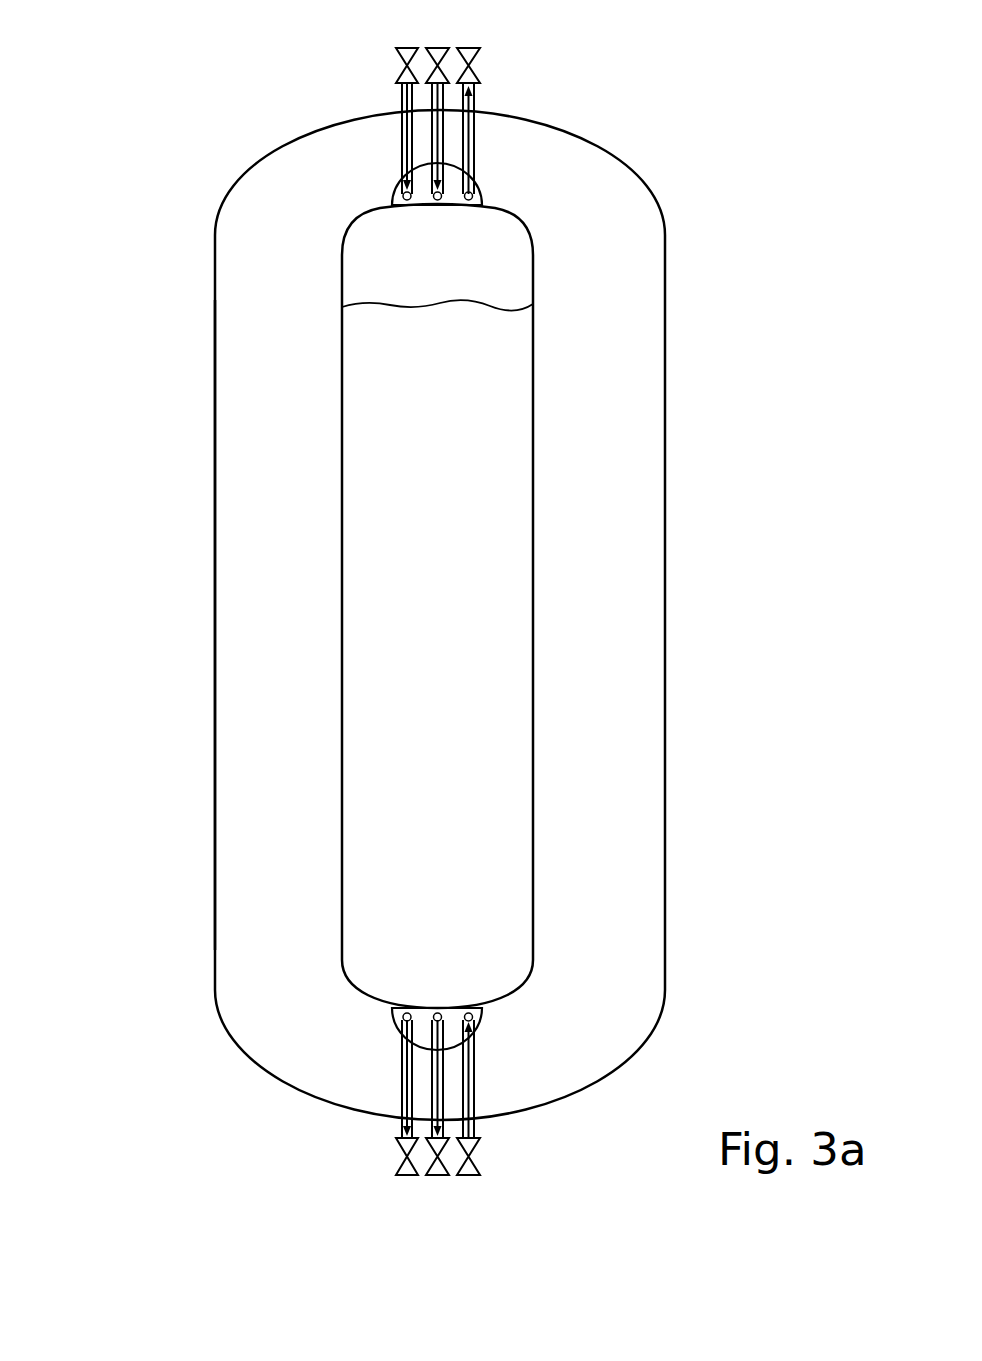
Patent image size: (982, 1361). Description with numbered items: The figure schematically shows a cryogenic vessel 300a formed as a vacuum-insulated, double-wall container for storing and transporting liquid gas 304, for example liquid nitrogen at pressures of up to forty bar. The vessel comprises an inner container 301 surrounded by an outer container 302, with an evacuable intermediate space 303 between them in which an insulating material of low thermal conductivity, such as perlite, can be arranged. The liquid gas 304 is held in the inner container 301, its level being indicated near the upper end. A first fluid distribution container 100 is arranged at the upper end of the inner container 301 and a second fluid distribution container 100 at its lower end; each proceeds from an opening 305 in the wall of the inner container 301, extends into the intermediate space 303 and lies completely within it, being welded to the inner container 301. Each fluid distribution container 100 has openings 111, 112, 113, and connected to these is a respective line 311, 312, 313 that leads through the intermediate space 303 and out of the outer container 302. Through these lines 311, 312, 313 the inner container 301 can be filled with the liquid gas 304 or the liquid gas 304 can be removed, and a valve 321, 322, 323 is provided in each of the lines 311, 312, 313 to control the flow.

The cryogenic vessel 300a is at (158, 302).
The inner container 301 is at (343, 345).
The outer container 302 is at (215, 400).
The intermediate space 303 is at (228, 515).
The liquid gas 304 is at (353, 568).
The opening 305 is at (451, 213).
The fluid distribution container 100 is at (393, 183).
The opening 111 is at (398, 198).
The opening 112 is at (413, 210).
The opening 113 is at (482, 198).
The line 311 is at (400, 97).
The line 312 is at (470, 92).
The line 313 is at (478, 158).
The valve 321 is at (397, 52).
The valve 322 is at (444, 50).
The valve 323 is at (482, 68).